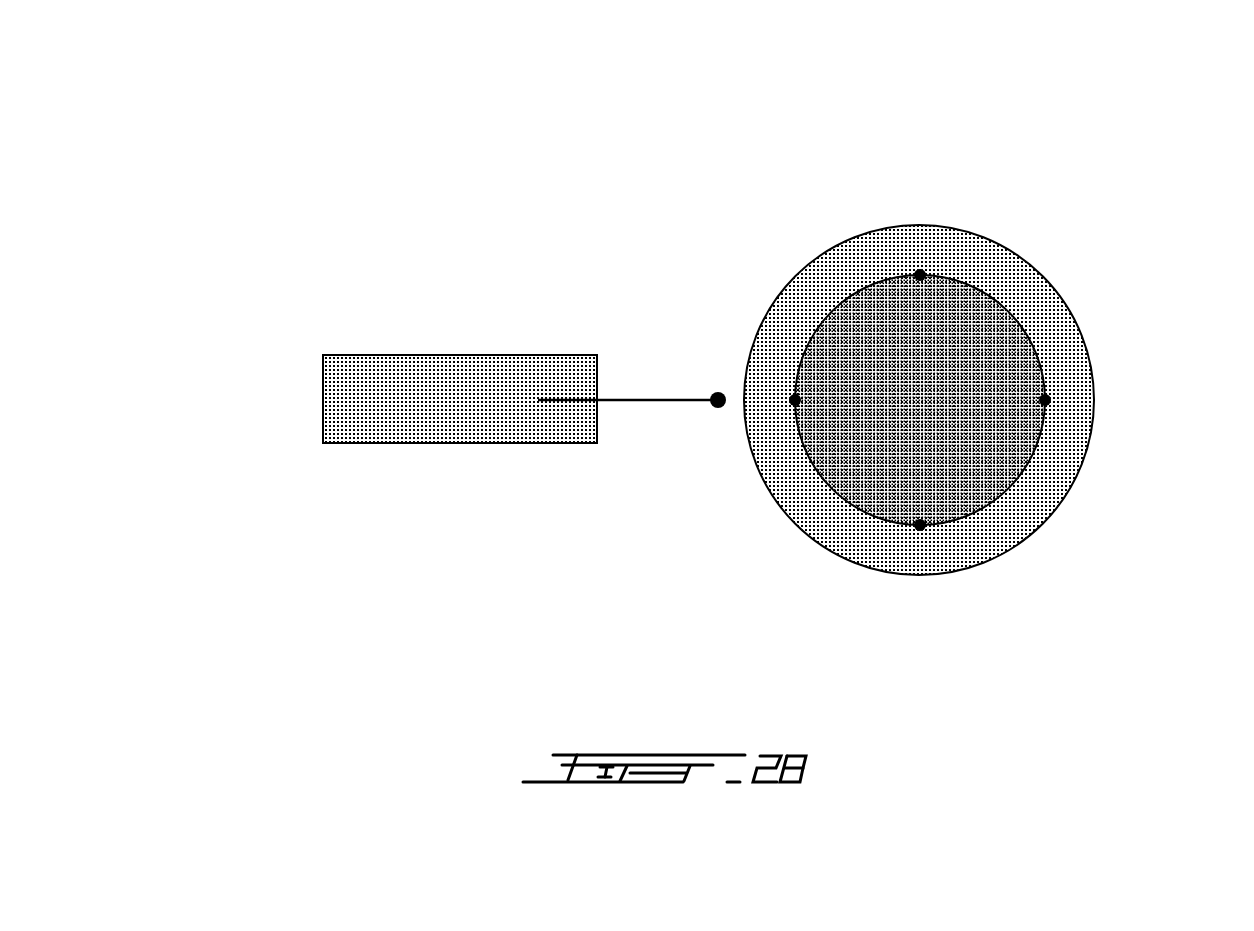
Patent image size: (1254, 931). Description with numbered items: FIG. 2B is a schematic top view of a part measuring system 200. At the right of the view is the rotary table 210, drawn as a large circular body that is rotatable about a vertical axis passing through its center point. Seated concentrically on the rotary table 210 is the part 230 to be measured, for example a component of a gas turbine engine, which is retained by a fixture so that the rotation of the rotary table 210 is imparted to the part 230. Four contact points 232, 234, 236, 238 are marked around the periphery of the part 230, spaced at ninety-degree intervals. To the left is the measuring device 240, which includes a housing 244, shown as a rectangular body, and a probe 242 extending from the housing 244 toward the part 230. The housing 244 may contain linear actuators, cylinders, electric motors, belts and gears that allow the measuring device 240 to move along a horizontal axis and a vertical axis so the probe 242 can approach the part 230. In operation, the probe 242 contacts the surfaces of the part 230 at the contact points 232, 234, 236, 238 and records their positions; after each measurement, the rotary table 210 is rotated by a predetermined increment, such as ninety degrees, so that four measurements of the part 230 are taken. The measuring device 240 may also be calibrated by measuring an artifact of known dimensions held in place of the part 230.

The part measuring system 200 is at (262, 148).
The rotary table 210 is at (995, 264).
The part 230 is at (1000, 334).
The contact point 232 is at (795, 400).
The contact point 234 is at (920, 527).
The contact point 236 is at (1045, 400).
The contact point 238 is at (920, 272).
The measuring device 240 is at (284, 394).
The probe 242 is at (658, 398).
The housing 244 is at (447, 378).